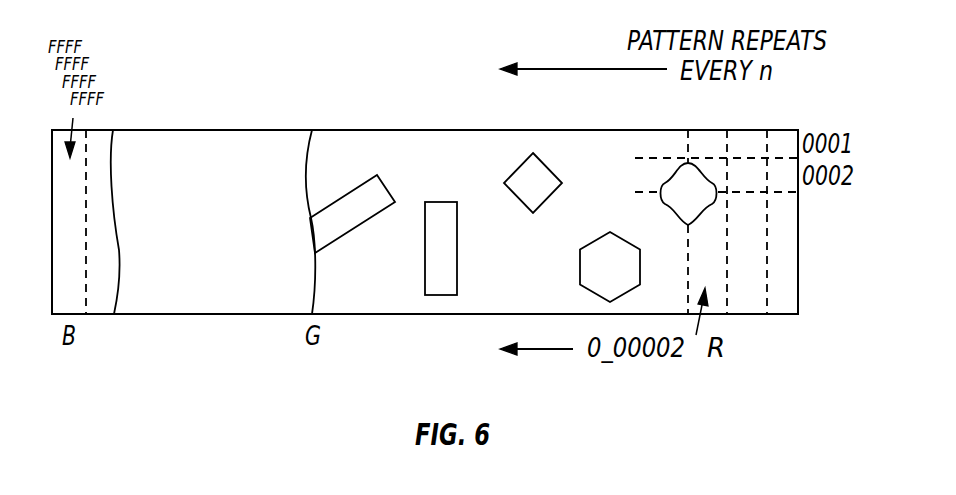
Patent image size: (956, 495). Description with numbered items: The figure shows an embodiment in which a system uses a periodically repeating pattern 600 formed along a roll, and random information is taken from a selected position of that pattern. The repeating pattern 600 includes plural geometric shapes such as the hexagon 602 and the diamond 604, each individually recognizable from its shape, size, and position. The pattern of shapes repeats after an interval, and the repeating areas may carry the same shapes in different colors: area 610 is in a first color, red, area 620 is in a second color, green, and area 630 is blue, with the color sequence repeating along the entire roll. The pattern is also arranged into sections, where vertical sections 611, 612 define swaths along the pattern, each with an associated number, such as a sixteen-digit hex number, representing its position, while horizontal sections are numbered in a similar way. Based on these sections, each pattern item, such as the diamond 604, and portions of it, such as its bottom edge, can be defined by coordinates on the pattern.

The repeating pattern 600 is at (148, 137).
The geometric shape 602 is at (596, 272).
The diamond 604 is at (518, 175).
The area 610 is at (345, 137).
The vertical section 611 is at (756, 226).
The vertical section 612 is at (708, 225).
The area 620 is at (240, 127).
The area 630 is at (103, 305).